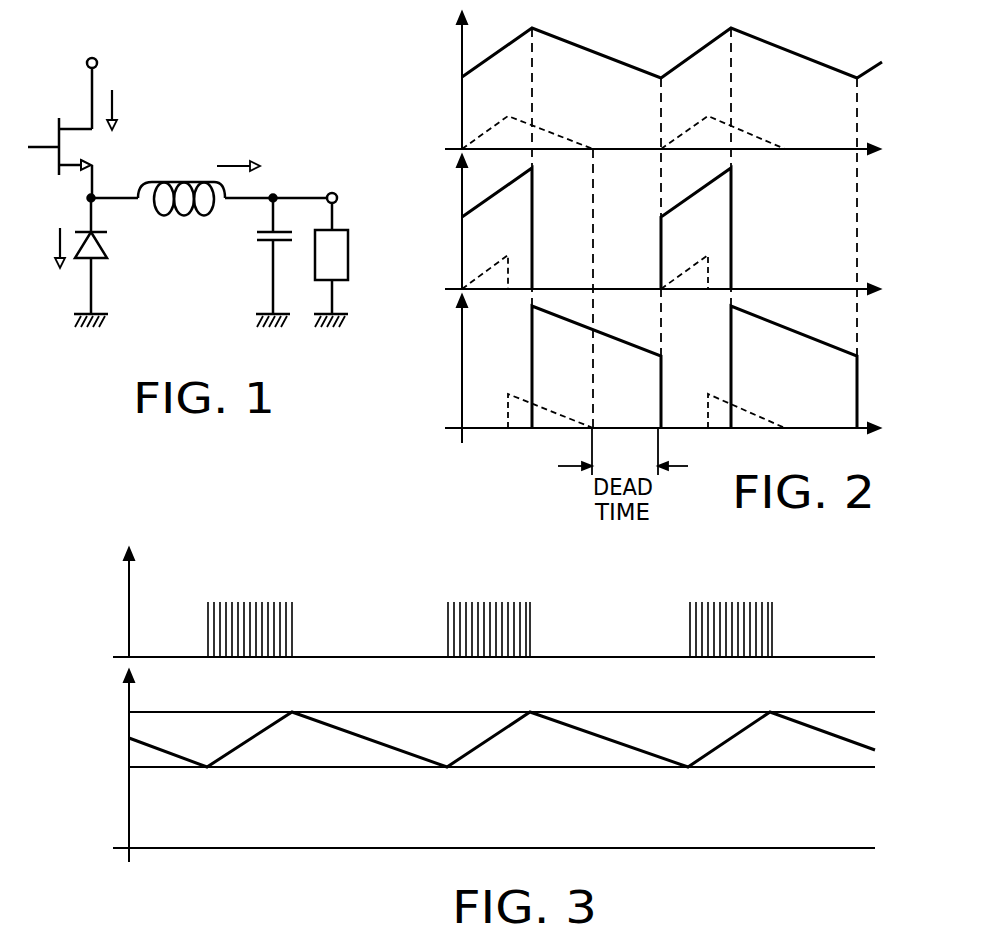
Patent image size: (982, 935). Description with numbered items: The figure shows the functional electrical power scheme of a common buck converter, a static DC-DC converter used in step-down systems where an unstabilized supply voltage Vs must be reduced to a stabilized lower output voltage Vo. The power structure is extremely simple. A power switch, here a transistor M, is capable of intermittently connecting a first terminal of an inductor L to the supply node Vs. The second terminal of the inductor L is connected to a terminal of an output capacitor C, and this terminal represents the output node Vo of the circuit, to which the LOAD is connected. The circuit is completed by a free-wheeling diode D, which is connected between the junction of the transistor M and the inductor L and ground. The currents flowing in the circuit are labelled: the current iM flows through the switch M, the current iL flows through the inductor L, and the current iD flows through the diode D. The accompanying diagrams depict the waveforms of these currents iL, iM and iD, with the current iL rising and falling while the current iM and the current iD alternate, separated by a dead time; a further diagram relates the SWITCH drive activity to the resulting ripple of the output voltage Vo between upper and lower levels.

In FIG. 1, the supply voltage Vs is at (92, 68).
In FIG. 1, the transistor M is at (60, 145).
In FIG. 1, the switch current iM is at (128, 110).
In FIG. 2, the switch current iM is at (579, 228).
In FIG. 1, the inductor L is at (183, 176).
In FIG. 1, the inductor current iL is at (238, 150).
In FIG. 2, the inductor current iL is at (654, 88).
In FIG. 1, the output voltage Vo is at (315, 171).
In FIG. 3, the output voltage Vo is at (475, 736).
In FIG. 1, the free-wheeling diode D is at (161, 262).
In FIG. 1, the diode current iD is at (45, 247).
In FIG. 2, the diode current iD is at (640, 367).
In FIG. 1, the output capacitor C is at (258, 262).
In FIG. 1, the load LOAD is at (366, 265).
In FIG. 3, the switch drive signal SWITCH is at (399, 616).